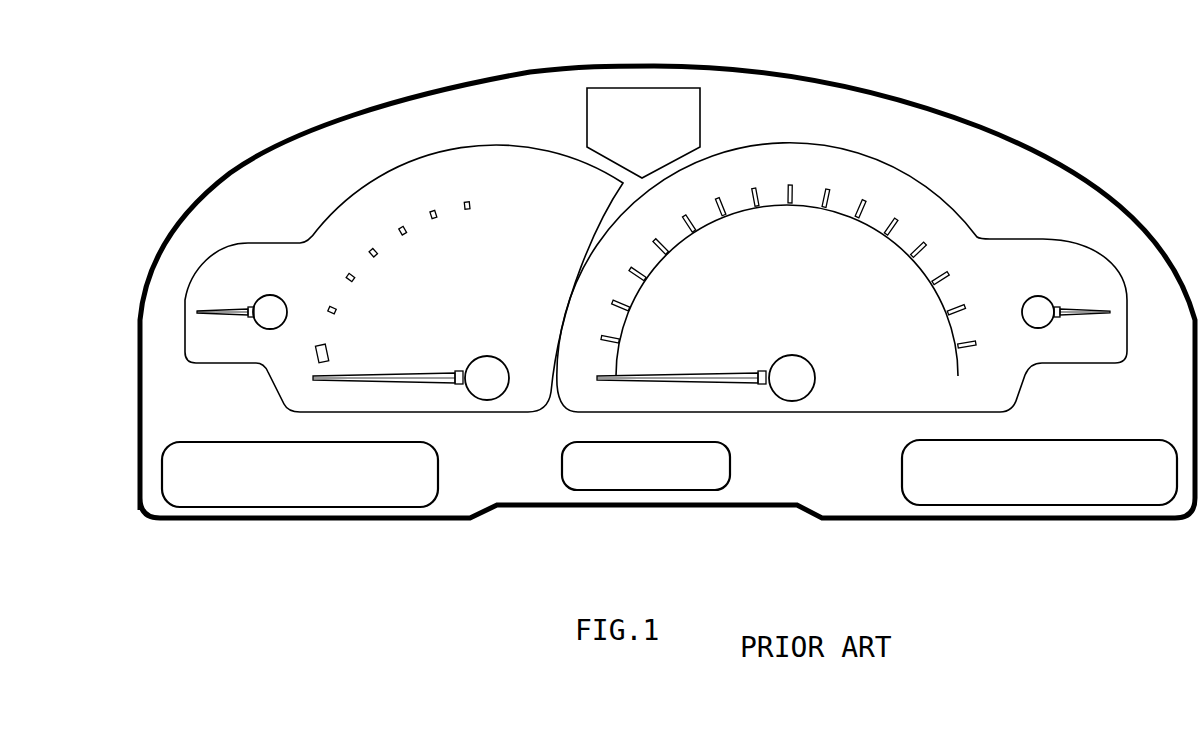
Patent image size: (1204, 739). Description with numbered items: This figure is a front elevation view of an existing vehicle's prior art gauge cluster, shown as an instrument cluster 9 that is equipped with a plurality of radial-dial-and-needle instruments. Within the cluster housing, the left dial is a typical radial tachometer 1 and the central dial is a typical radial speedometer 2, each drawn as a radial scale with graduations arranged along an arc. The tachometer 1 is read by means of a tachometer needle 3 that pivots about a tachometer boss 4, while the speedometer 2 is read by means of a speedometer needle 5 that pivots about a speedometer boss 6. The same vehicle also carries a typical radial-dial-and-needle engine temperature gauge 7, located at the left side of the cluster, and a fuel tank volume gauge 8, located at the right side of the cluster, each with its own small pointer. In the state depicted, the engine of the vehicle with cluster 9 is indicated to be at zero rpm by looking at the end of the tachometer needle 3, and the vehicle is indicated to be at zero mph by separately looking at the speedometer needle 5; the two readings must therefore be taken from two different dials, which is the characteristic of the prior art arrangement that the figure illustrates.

The radial tachometer 1 is at (508, 182).
The radial speedometer 2 is at (842, 234).
The tachometer needle 3 is at (407, 373).
The tachometer boss 4 is at (490, 383).
The speedometer needle 5 is at (712, 378).
The speedometer boss 6 is at (793, 385).
The engine temperature gauge 7 is at (250, 340).
The fuel tank volume gauge 8 is at (1068, 328).
The instrument cluster 9 is at (325, 172).